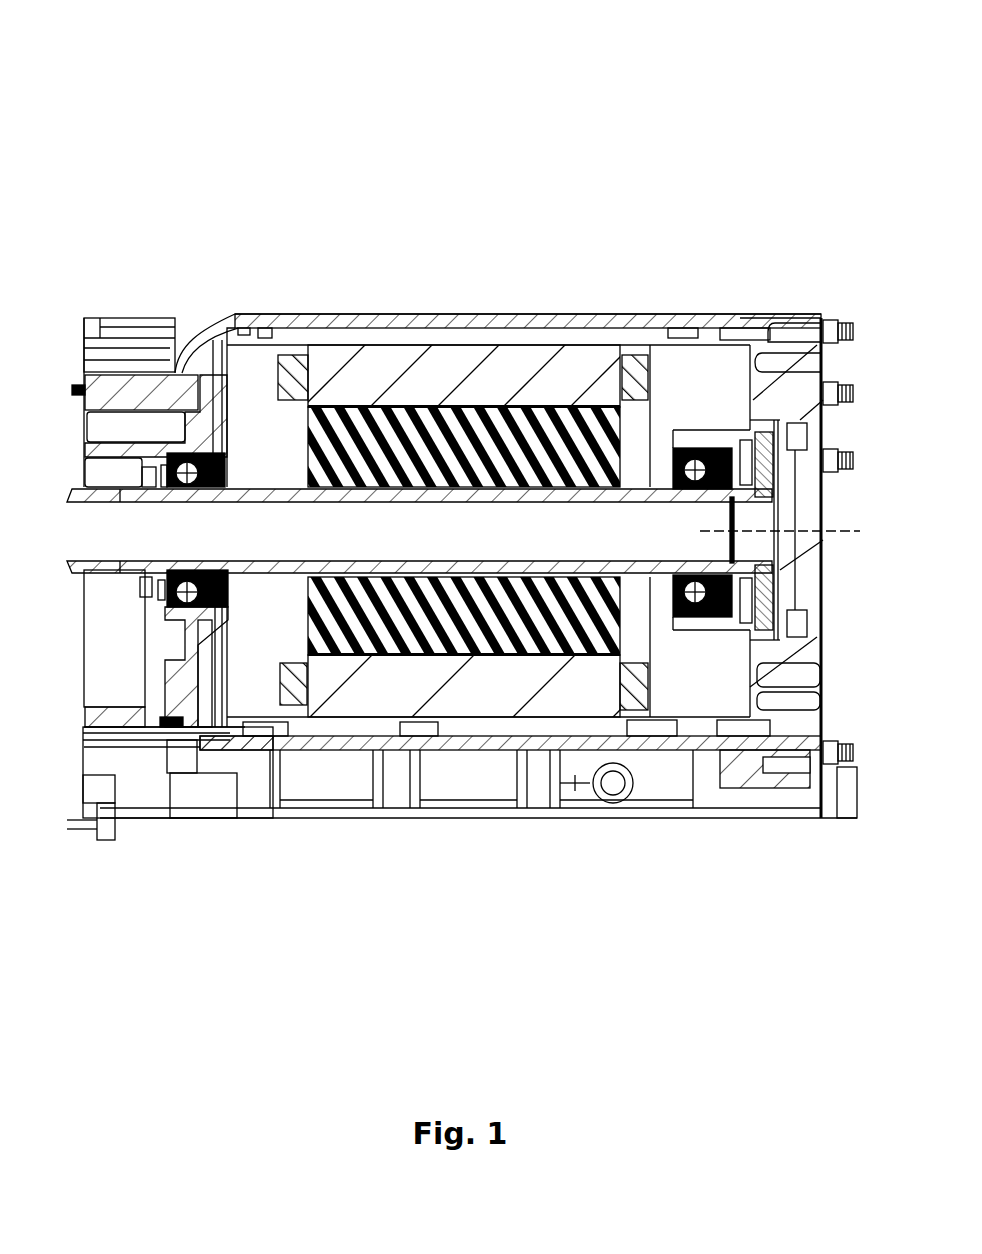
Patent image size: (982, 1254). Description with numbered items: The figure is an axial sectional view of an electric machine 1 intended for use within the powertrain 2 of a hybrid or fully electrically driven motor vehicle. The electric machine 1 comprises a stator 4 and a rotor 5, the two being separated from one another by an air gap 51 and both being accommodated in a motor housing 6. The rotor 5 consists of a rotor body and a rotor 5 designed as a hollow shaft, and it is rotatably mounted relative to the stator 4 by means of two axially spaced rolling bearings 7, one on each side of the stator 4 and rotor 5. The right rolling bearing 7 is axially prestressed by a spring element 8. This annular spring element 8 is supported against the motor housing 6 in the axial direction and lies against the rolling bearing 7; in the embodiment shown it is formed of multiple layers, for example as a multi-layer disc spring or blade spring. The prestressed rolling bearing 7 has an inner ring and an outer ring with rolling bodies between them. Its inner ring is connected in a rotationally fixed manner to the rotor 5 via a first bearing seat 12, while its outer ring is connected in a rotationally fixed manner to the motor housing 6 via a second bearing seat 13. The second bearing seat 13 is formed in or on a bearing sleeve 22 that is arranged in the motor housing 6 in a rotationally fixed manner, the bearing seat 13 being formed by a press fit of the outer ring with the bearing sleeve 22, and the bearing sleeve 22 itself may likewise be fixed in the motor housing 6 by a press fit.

The electric machine 1 is at (388, 155).
The powertrain 2 is at (44, 538).
The stator 4 is at (523, 365).
The rotor 5 is at (432, 600).
The air gap 51 is at (356, 385).
The motor housing 6 is at (254, 318).
The rolling bearing 7 is at (174, 635).
The spring element 8 is at (792, 565).
The first bearing seat 12 is at (706, 498).
The second bearing seat 13 is at (700, 450).
The bearing sleeve 22 is at (723, 244).